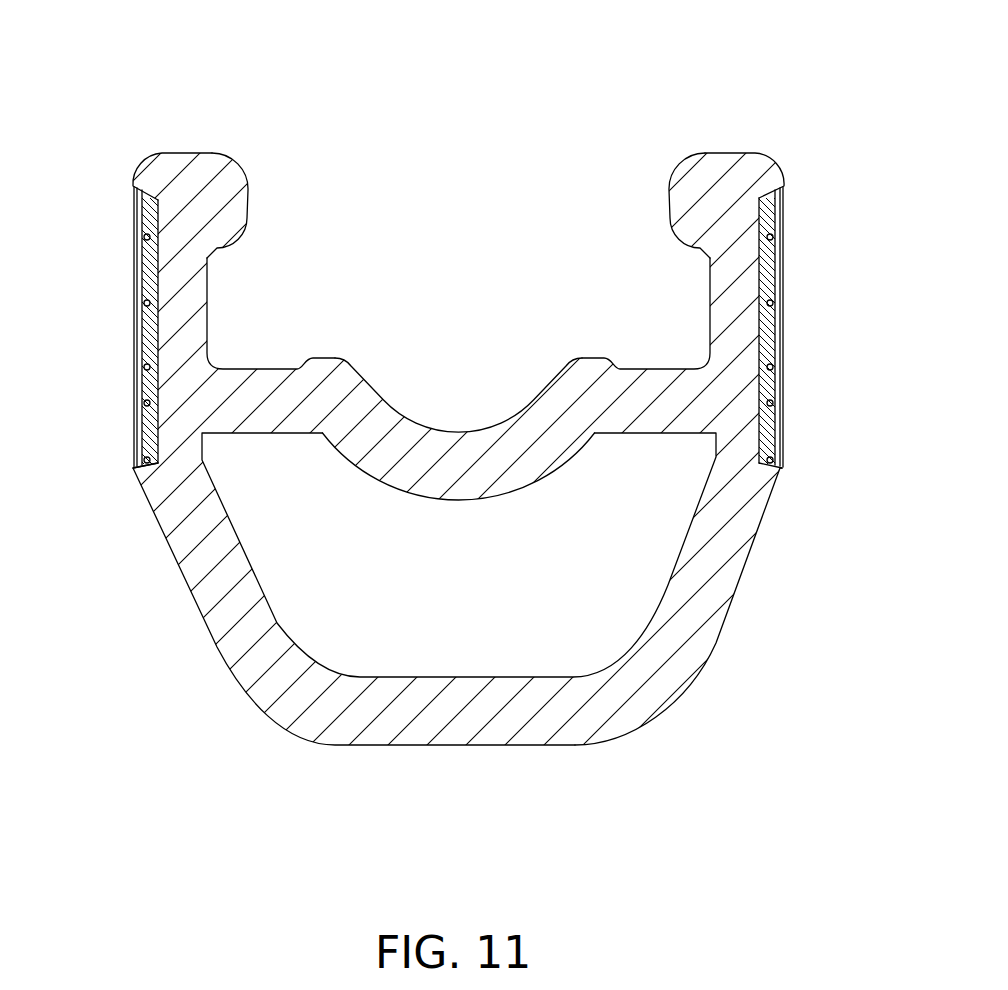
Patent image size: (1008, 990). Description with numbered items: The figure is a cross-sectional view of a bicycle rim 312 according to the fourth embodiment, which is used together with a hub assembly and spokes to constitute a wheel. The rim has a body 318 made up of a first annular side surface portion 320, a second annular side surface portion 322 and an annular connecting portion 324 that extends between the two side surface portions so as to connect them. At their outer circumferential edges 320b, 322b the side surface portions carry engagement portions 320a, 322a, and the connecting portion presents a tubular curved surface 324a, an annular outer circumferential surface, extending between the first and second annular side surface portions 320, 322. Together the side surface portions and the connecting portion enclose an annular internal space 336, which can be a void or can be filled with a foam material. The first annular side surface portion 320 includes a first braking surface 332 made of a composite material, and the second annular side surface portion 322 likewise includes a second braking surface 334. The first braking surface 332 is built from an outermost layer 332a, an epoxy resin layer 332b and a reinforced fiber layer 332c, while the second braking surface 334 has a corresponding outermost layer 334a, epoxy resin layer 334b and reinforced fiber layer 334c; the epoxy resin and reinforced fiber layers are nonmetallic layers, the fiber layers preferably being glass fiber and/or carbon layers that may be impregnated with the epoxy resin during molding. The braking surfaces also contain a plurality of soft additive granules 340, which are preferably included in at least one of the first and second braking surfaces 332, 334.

The bicycle rim 312 is at (157, 115).
The body 318 is at (810, 534).
The first annular side surface portion 320 is at (266, 587).
The engagement portion 320a is at (255, 190).
The outer circumferential edge 320b is at (199, 148).
The second annular side surface portion 322 is at (741, 576).
The engagement portion 322a is at (667, 189).
The outer circumferential edge 322b is at (739, 148).
The annular connecting portion 324 is at (547, 479).
The tubular curved surface 324a is at (466, 430).
The first braking surface 332 is at (110, 184).
The outermost layer 332a is at (136, 260).
The epoxy resin layer 332b is at (148, 342).
The reinforced fiber layer 332c is at (160, 283).
The second braking surface 334 is at (807, 184).
The outermost layer 334a is at (779, 260).
The epoxy resin layer 334b is at (770, 342).
The reinforced fiber layer 334c is at (772, 283).
The annular internal space 336 is at (480, 571).
The soft additive granules 340 is at (141, 405).